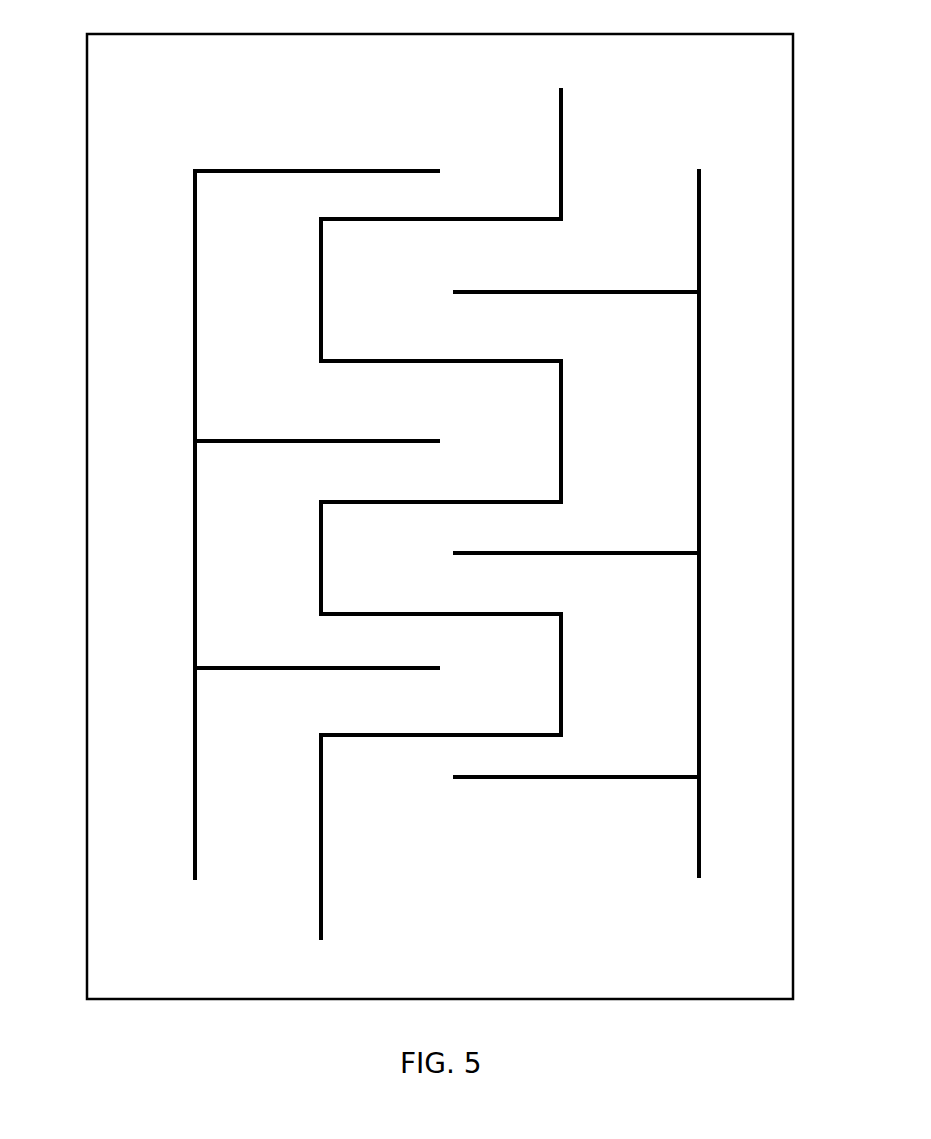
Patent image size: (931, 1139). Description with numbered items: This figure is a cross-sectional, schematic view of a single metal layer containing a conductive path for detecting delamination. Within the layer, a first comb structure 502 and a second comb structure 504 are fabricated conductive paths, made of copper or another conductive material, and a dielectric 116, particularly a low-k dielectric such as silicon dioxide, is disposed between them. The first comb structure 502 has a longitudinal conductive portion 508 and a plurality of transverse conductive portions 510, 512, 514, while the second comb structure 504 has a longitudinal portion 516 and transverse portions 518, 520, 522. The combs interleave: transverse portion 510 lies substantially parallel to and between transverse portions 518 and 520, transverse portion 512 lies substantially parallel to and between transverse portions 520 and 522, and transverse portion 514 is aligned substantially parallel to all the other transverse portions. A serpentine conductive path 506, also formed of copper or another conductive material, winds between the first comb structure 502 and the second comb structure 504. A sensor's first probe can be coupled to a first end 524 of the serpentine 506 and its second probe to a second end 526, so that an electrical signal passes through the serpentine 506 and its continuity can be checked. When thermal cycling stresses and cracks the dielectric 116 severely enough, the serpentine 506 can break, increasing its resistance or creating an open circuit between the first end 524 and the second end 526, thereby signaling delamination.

The dielectric 116 is at (186, 110).
The first comb structure 502 is at (289, 525).
The second comb structure 504 is at (647, 523).
The serpentine conductive path 506 is at (470, 514).
The longitudinal conductive portion 508 is at (193, 560).
The transverse conductive portion 510 is at (266, 670).
The transverse conductive portion 512 is at (257, 443).
The transverse conductive portion 514 is at (271, 174).
The longitudinal portion 516 is at (701, 658).
The transverse portion 518 is at (548, 779).
The transverse portion 520 is at (573, 555).
The transverse portion 522 is at (567, 294).
The first end 524 is at (321, 940).
The second end 526 is at (561, 88).